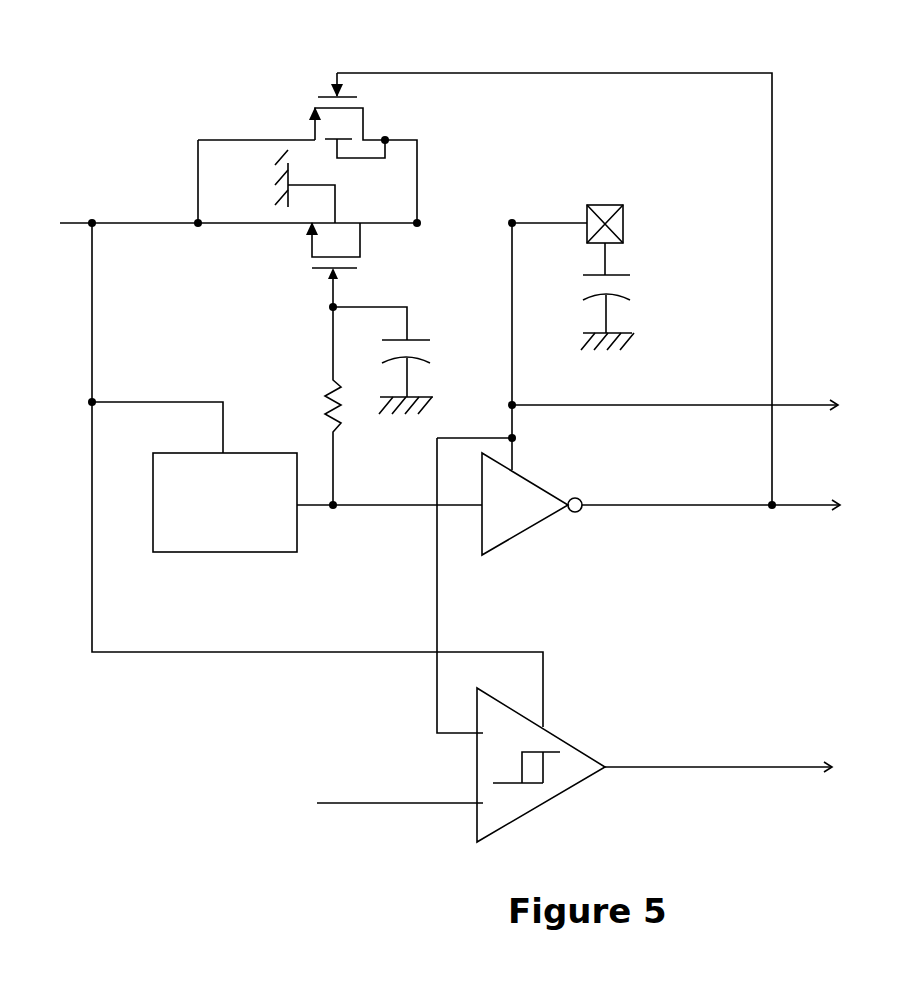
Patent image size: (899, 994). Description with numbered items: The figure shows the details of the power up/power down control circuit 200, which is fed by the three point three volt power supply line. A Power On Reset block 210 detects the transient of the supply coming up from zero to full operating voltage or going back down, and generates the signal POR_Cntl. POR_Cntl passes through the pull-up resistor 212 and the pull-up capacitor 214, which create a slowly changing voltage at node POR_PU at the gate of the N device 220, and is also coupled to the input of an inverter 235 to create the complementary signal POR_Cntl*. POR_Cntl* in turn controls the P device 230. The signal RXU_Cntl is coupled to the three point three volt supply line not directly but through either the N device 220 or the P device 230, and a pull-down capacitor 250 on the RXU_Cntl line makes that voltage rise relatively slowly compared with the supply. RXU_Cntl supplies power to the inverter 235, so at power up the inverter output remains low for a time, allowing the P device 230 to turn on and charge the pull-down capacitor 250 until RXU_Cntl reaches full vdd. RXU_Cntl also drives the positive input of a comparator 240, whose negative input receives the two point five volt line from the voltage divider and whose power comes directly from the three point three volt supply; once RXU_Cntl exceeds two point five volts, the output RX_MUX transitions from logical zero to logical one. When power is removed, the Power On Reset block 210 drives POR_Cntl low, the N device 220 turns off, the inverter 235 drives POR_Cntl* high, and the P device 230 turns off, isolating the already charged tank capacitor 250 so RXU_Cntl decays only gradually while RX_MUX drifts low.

The PU/PD control circuit 200 is at (860, 106).
The Power On Reset block 210 is at (182, 543).
The resistor R_PU 212 is at (325, 381).
The capacitor C_PU 214 is at (432, 347).
The N device 220 is at (365, 260).
The P device 230 is at (372, 132).
The inverter 235 is at (515, 545).
The comparator 240 is at (570, 740).
The capacitor C_PD 250 is at (633, 278).